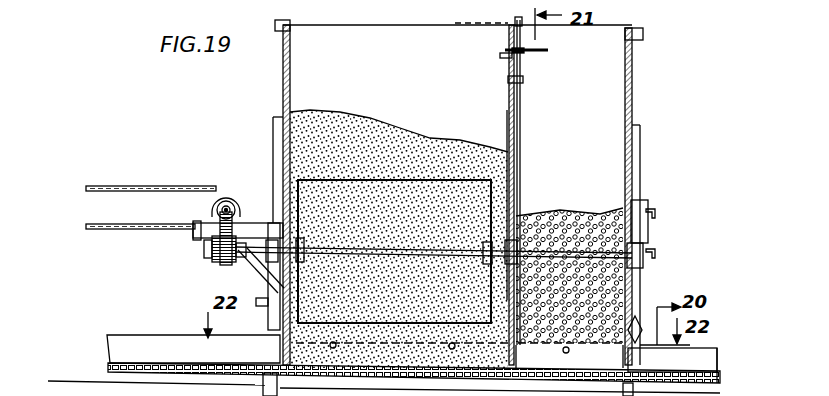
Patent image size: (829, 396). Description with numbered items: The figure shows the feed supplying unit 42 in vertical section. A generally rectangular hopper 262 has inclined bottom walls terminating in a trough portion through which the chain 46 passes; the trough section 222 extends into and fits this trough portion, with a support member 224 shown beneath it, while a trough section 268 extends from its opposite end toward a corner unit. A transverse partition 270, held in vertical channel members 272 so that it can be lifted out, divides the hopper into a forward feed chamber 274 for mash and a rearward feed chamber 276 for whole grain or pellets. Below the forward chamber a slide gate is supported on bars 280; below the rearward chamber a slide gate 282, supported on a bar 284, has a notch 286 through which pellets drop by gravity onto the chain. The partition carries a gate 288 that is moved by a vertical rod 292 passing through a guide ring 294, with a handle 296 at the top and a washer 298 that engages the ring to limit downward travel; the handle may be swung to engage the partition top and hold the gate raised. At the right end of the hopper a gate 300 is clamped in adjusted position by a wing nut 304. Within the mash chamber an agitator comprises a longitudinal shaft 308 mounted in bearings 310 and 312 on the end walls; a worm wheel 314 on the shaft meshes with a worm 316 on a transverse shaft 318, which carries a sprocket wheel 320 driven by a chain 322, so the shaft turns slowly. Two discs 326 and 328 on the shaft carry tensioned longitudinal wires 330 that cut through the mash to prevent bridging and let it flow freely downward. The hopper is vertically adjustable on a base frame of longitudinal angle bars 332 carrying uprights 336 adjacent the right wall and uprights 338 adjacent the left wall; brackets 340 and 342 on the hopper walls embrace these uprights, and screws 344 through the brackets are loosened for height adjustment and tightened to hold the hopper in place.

The feed supplying unit 42 is at (454, 192).
The chain 46 is at (178, 368).
The trough section 222 is at (141, 343).
The support post 224 is at (265, 380).
The hopper 262 is at (632, 90).
The trough section 268 is at (706, 353).
The transverse partition 270 is at (509, 93).
The vertical channel members 272 is at (507, 122).
The forward feed chamber 274 is at (283, 76).
The rearward feed chamber 276 is at (630, 60).
The bars 280 is at (337, 348).
The slide gate 282 is at (585, 361).
The bar 284 is at (569, 351).
The notch 286 is at (610, 345).
The gate 288 is at (558, 349).
The vertical rod 292 is at (521, 118).
The guide ring 294 is at (524, 81).
The handle 296 is at (455, 24).
The washer 298 is at (523, 78).
The gate 300 is at (672, 360).
The wing nut 304 is at (637, 322).
The longitudinal shaft 308 is at (533, 257).
The bearing 310 is at (249, 218).
The bearing 312 is at (641, 250).
The worm wheel 314 is at (219, 263).
The worm 316 is at (232, 201).
The transverse shaft 318 is at (223, 200).
The sprocket wheel 320 is at (214, 209).
The chain 322 is at (160, 183).
The disc 326 is at (299, 202).
The disc 328 is at (488, 212).
The longitudinal wires 330 is at (415, 300).
The longitudinal angle bars 332 is at (404, 180).
The uprights 336 is at (641, 145).
The uprights 338 is at (273, 137).
The brackets 340 is at (645, 200).
The brackets 342 is at (268, 290).
The screws 344 is at (262, 307).